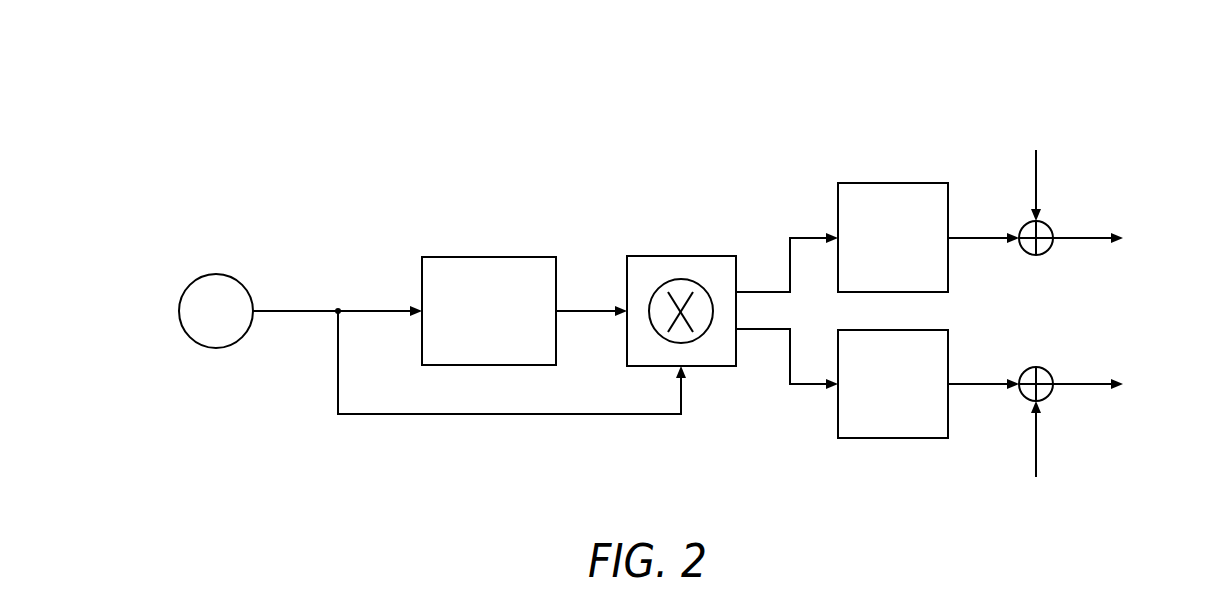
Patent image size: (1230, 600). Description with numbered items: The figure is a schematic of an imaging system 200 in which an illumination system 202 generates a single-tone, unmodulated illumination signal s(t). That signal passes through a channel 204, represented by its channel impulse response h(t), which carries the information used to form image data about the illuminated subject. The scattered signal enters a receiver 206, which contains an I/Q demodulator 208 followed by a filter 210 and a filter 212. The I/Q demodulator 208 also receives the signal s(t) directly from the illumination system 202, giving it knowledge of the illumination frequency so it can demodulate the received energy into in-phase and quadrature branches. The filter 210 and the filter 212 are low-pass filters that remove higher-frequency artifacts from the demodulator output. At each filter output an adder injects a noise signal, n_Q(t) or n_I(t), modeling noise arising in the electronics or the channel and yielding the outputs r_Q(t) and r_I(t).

The system 200 is at (1104, 70).
The illumination system 202 is at (217, 273).
The channel 204 is at (489, 257).
The receiver 206 is at (771, 183).
The I/Q demodulator 208 is at (681, 256).
The filter 210 is at (893, 183).
The filter 212 is at (893, 438).